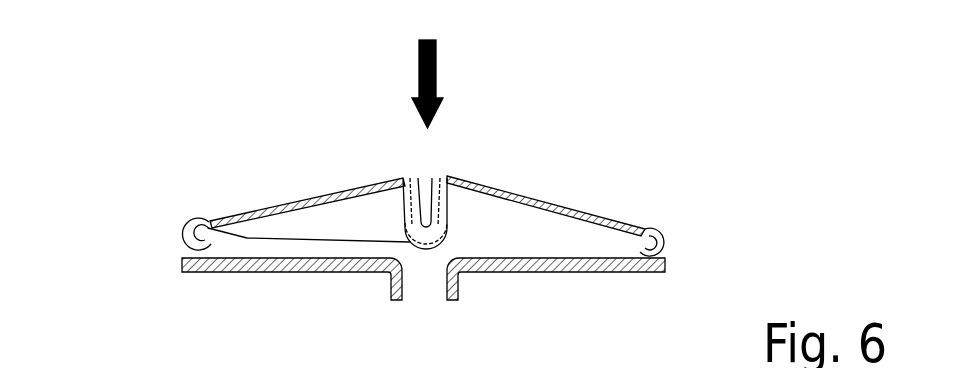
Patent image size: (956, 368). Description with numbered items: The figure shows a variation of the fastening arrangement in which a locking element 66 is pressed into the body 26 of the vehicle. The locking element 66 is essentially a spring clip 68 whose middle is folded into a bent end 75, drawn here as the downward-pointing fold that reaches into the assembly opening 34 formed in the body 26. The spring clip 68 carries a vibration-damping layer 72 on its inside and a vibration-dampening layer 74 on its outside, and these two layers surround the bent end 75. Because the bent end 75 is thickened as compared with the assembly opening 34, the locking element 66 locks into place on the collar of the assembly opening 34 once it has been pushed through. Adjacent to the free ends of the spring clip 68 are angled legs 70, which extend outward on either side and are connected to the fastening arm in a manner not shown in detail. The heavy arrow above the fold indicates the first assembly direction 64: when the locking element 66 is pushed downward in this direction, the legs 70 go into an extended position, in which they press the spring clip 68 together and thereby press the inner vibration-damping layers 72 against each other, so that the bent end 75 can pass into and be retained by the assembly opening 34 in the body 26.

The body 26 is at (183, 262).
The assembly opening 34 is at (236, 324).
The first assembly direction 64 is at (437, 67).
The locking element 66 is at (560, 183).
The spring clip 68 is at (443, 220).
The angled legs 70 is at (250, 212).
The vibration-damping layer 72 is at (392, 94).
The vibration-dampening layer 74 is at (397, 180).
The bent end 75 is at (200, 219).